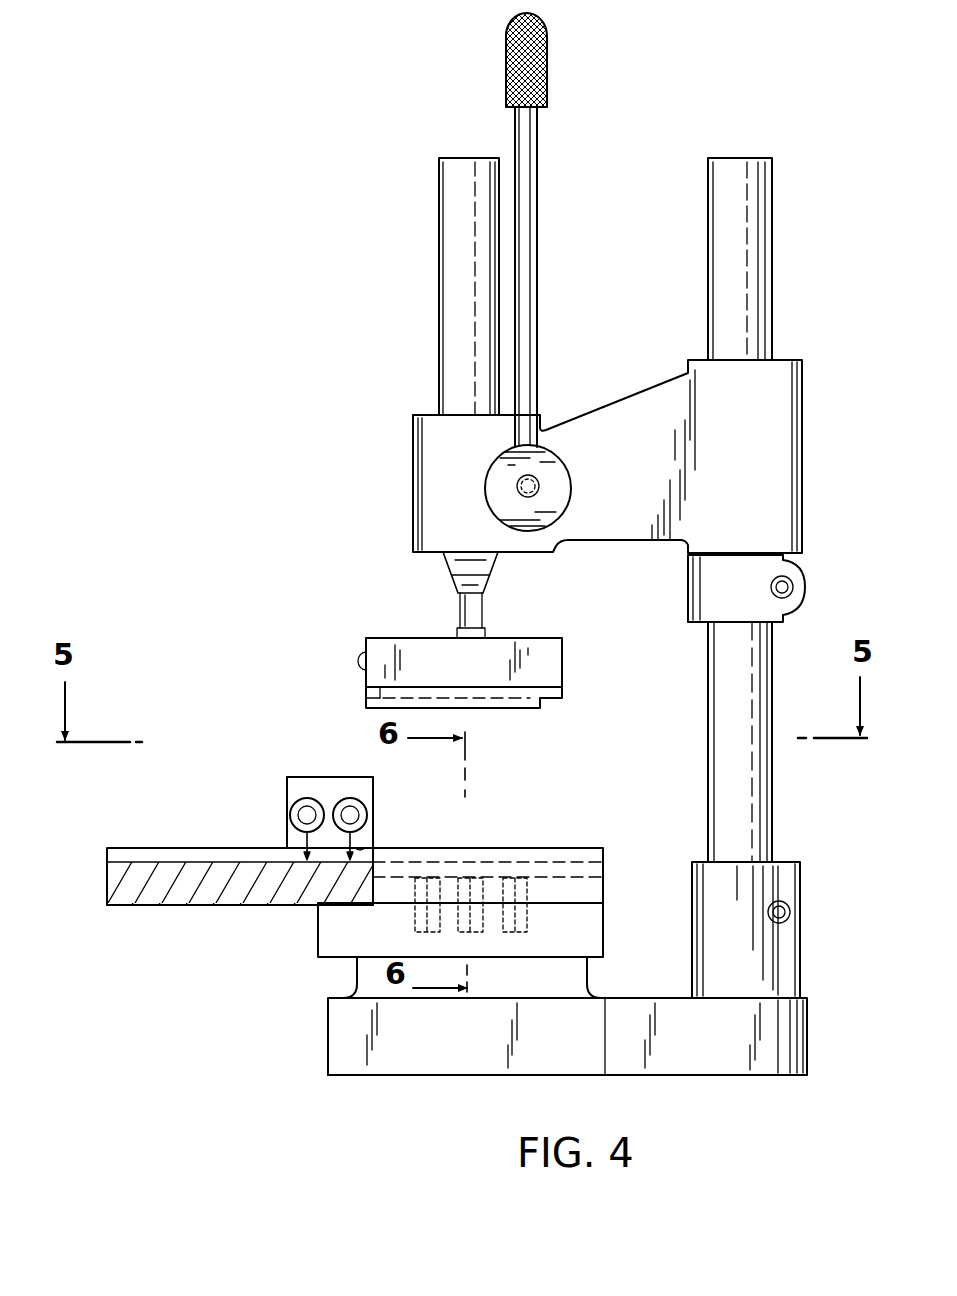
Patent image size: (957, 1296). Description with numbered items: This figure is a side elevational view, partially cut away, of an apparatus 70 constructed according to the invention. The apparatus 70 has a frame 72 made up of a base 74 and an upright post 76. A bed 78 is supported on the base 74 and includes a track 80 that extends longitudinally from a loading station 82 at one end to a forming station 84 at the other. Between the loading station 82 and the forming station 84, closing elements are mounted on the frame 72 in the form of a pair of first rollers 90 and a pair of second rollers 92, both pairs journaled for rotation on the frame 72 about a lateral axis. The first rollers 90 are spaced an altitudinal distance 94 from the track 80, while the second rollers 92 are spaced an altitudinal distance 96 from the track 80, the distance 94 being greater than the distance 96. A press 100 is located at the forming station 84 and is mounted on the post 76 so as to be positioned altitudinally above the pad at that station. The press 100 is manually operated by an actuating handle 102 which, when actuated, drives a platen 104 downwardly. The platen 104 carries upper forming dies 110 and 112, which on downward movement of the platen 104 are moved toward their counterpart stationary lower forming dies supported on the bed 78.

The apparatus 70 is at (356, 1078).
The frame 72 is at (365, 973).
The base 74 is at (340, 1032).
The post 76 is at (722, 705).
The bed 78 is at (590, 935).
The track 80 is at (247, 860).
The loading station 82 is at (142, 845).
The forming station 84 is at (511, 843).
The first rollers 90 is at (308, 797).
The second rollers 92 is at (352, 797).
The altitudinal distance 94 is at (300, 850).
The altitudinal distance 96 is at (355, 848).
The press 100 is at (411, 477).
The actuating handle 102 is at (547, 62).
The platen 104 is at (530, 638).
The upper forming die 110 is at (527, 708).
The upper forming die 112 is at (366, 695).